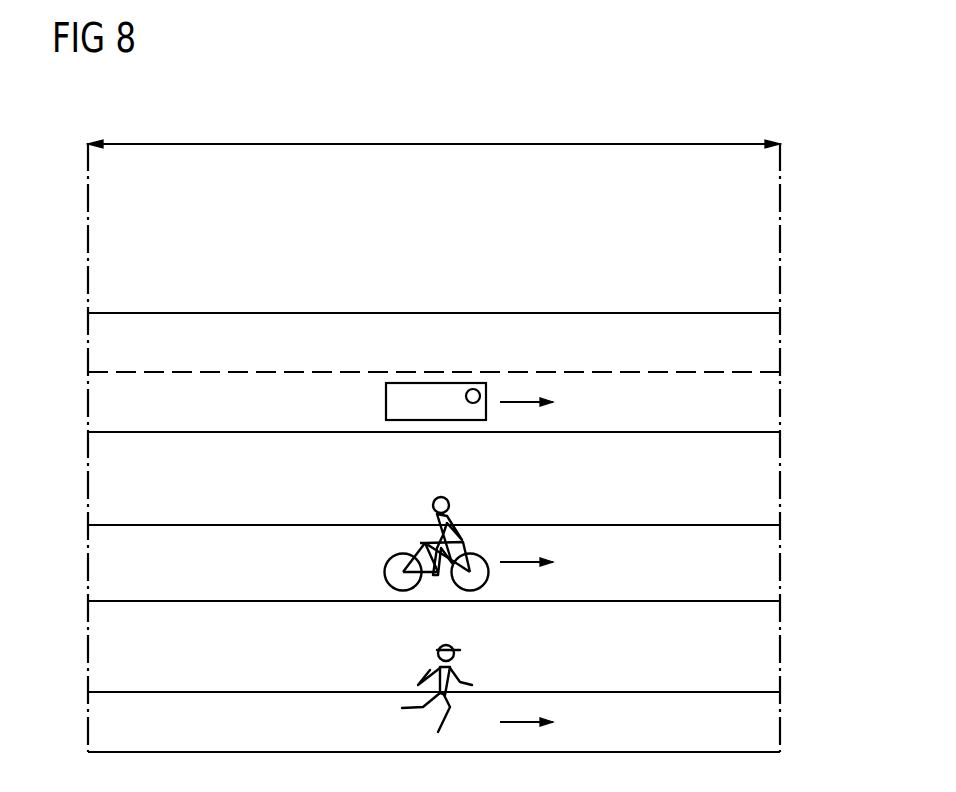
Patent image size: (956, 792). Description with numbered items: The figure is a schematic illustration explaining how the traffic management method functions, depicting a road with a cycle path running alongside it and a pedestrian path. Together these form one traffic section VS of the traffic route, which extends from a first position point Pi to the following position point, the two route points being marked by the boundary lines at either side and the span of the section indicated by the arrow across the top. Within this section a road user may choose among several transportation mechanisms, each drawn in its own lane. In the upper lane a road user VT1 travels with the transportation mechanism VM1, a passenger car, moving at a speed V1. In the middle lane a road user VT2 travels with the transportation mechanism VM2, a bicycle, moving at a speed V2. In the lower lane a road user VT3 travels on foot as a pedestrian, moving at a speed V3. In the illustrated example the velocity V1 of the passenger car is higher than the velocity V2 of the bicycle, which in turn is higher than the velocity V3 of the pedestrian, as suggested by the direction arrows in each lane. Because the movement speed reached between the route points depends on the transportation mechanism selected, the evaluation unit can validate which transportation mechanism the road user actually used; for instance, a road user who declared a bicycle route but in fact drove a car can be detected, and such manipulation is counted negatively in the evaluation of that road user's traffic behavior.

The traffic route point Pi is at (89, 426).
The traffic section VS is at (437, 143).
The first transportation mechanism VM1 is at (417, 393).
The road user VT1 is at (472, 383).
The speed of first transportation mechanism V1 is at (518, 402).
The road user VT2 is at (433, 505).
The second transportation mechanism VM2 is at (483, 555).
The speed of second transportation mechanism V2 is at (517, 562).
The road user VT3 is at (418, 678).
The speed of third transportation mechanism V3 is at (516, 722).